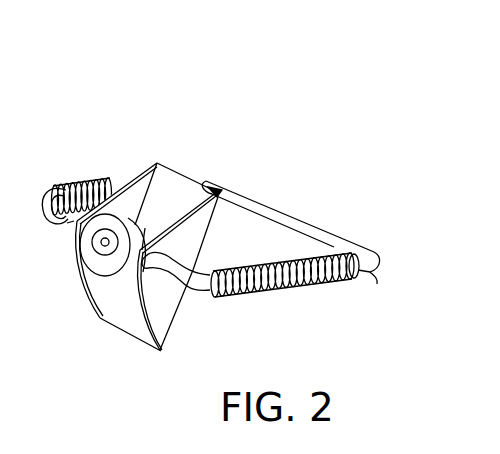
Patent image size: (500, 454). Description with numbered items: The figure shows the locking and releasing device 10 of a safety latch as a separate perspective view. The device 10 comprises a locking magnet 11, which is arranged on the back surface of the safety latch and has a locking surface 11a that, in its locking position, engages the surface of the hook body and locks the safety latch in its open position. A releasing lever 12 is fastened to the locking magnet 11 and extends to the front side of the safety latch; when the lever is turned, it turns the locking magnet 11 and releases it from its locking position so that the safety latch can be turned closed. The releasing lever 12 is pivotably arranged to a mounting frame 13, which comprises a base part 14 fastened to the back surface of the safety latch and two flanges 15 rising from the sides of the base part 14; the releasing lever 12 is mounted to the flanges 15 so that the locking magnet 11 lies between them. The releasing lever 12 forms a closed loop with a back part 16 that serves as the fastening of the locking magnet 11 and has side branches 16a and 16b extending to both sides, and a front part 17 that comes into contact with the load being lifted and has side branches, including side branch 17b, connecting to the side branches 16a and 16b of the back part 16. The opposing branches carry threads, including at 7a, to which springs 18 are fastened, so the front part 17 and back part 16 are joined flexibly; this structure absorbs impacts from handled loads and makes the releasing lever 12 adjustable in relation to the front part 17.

The locking and releasing device 10 is at (214, 116).
The hinge pin 7a is at (217, 192).
The locking magnet 11 is at (107, 275).
The locking surface 11a is at (88, 260).
The releasing lever 12 is at (275, 182).
The mounting frame 13 is at (148, 157).
The base part 14 is at (128, 323).
The flanges 15 is at (128, 203).
The back part 16 is at (67, 223).
The side branch 16a is at (55, 200).
The side branch 16b is at (195, 292).
The front part 17 is at (293, 210).
The side branch 17b is at (374, 280).
The springs 18 is at (102, 187).